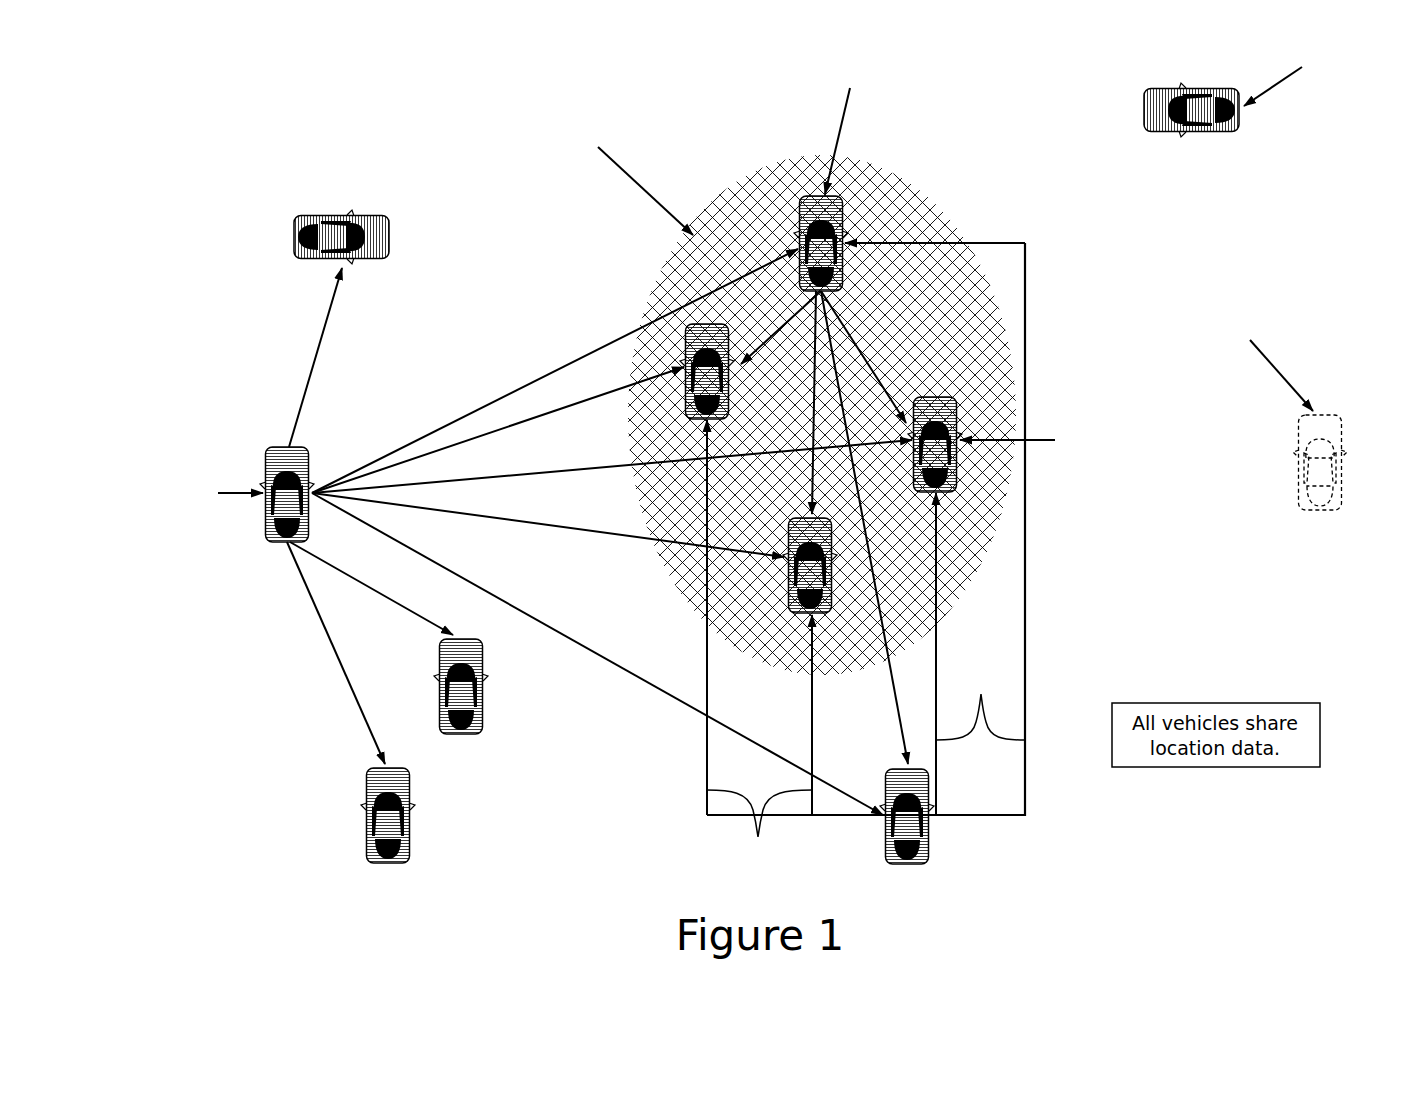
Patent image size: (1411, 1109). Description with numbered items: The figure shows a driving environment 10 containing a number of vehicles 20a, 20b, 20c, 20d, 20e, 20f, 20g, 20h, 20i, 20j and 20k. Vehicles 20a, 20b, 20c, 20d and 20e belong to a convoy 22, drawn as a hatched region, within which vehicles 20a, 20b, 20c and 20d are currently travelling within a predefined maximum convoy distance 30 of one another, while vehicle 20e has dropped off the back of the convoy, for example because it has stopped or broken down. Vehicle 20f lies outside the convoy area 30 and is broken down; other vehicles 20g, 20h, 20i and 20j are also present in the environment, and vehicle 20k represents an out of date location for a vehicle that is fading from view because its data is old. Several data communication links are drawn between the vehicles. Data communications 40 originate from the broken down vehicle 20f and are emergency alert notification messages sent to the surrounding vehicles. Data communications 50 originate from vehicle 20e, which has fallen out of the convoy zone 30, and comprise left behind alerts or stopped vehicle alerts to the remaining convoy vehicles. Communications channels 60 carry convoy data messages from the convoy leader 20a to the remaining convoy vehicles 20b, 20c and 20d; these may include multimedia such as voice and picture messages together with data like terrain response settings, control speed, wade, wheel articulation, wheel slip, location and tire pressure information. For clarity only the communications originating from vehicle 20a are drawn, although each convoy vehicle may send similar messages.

The driving environment 10 is at (262, 121).
The convoy leader vehicle 20a is at (855, 177).
The convoy vehicle 20b is at (720, 360).
The convoy vehicle 20c is at (1059, 433).
The convoy vehicle 20d is at (822, 578).
The dropped-off convoy vehicle 20e is at (924, 825).
The broken down vehicle 20f is at (198, 484).
The other vehicle 20g is at (325, 227).
The other vehicle 20h is at (482, 686).
The other vehicle 20i is at (407, 815).
The other vehicle 20j is at (1265, 102).
The out of date vehicle location 20k is at (1263, 398).
The convoy 22 is at (907, 205).
The maximum convoy distance 30 is at (633, 117).
The data communications 40 is at (322, 342).
The data communications 50 is at (975, 555).
The communications channels 60 is at (879, 395).